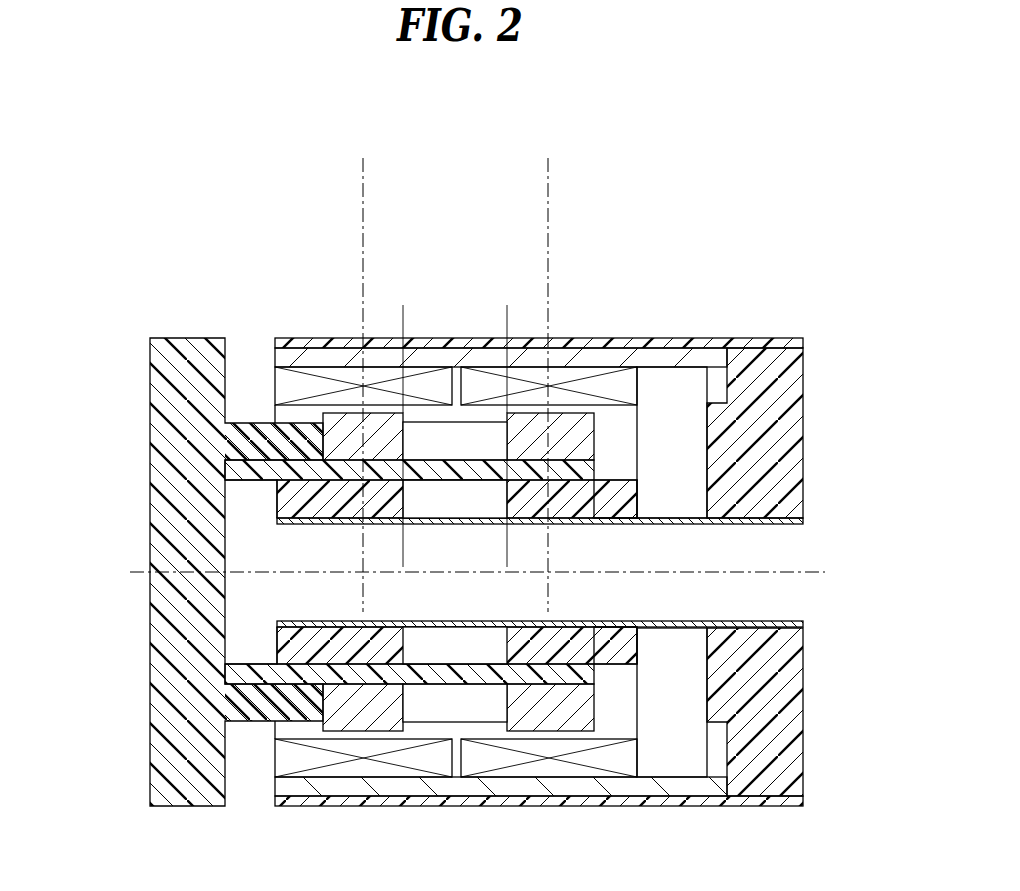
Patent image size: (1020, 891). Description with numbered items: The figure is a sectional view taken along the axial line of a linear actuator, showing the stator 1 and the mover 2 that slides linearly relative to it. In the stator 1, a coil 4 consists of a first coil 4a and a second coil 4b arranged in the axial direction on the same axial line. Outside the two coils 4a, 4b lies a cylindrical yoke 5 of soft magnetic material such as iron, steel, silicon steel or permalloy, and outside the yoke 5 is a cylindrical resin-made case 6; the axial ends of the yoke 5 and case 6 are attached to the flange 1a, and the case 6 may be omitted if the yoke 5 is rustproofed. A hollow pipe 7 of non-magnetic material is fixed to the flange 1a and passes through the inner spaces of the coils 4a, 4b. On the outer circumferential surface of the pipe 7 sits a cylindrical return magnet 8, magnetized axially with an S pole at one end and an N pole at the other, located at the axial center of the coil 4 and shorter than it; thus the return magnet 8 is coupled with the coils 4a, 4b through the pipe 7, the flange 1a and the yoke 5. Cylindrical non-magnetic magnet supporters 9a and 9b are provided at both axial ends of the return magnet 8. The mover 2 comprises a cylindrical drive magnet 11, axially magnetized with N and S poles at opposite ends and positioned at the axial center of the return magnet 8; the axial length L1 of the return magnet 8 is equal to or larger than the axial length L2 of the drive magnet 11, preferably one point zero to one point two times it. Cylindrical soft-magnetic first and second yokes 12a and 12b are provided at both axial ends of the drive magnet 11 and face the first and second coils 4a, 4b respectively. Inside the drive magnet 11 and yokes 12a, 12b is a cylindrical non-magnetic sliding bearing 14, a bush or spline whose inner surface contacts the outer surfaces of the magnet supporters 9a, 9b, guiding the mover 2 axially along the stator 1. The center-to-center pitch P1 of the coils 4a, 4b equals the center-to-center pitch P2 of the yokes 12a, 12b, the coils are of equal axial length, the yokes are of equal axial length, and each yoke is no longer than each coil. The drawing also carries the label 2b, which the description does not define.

The stator 1 is at (583, 490).
The flange 1a is at (797, 409).
The mover 2 is at (116, 505).
The rotation axis 2b is at (146, 571).
The coil 4 is at (456, 475).
The first coil 4a is at (372, 376).
The second coil 4b is at (540, 376).
The yoke 5 is at (565, 356).
The case 6 is at (668, 339).
The pipe 7 is at (696, 517).
The return magnet 8 is at (483, 565).
The magnet supporter 9a is at (277, 490).
The magnet supporter 9b is at (639, 513).
The drive magnet 11 is at (468, 441).
The first yoke 12a is at (336, 422).
The second yoke 12b is at (583, 422).
The sliding bearing 14 is at (596, 468).
The center-to-center pitch of the first and second coils P1 is at (548, 163).
The center-to-center pitch of the first and second yokes P2 is at (548, 608).
The axial length of the return magnet L1 is at (507, 553).
The axial length of the drive magnet L2 is at (507, 312).